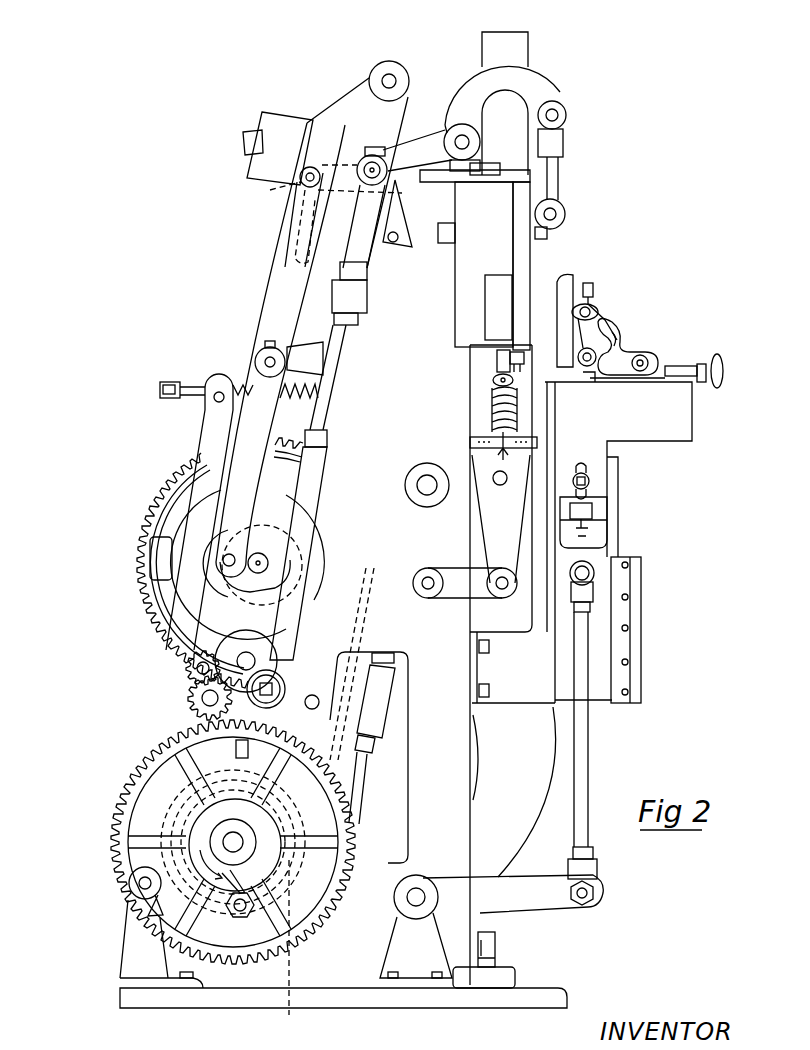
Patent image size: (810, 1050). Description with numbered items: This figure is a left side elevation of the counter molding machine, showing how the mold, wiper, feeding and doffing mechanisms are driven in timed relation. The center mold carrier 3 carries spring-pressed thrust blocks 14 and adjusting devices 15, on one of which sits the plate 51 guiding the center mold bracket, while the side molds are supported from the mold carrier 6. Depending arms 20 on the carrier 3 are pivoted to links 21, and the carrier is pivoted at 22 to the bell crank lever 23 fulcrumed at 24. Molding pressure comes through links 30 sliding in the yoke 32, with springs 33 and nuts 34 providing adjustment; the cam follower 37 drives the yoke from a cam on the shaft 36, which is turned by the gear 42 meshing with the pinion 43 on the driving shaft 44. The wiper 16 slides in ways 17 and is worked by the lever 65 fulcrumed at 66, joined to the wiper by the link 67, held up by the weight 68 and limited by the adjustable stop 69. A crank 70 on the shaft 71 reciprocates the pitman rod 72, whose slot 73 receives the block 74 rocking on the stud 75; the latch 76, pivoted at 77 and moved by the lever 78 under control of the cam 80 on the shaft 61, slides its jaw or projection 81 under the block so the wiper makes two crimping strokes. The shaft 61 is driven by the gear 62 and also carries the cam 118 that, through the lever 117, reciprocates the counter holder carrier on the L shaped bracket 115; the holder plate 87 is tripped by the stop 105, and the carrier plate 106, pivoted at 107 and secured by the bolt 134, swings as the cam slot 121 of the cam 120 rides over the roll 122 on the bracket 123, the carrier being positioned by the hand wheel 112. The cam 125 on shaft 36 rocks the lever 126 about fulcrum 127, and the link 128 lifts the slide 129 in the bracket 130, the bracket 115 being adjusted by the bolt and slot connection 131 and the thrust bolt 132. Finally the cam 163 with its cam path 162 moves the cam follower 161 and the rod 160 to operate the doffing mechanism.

The mold carrier 3 is at (478, 455).
The mold carrier 6 is at (490, 267).
The spring-pressed thrust blocks 14 is at (497, 378).
The adjusting devices 15 is at (470, 440).
The wiper 16 is at (528, 195).
The ways 17 is at (523, 250).
The depending arms 20 is at (490, 528).
The links 21 is at (463, 577).
The pivot 22 is at (500, 484).
The bell crank lever 23 is at (523, 803).
The fulcrum 24 is at (423, 487).
The links 30 is at (362, 783).
The yoke 32 is at (385, 697).
The springs 33 is at (395, 657).
The nuts 34 is at (373, 748).
The shaft 36 is at (230, 843).
The cam follower 37 is at (340, 685).
The gear 42 is at (112, 829).
The pinion 43 is at (190, 700).
The driving shaft 44 is at (203, 687).
The plate 51 is at (543, 420).
The shaft 61 is at (268, 563).
The gear 62 is at (137, 550).
The lever 65 is at (532, 80).
The fulcrum 66 is at (462, 138).
The link 67 is at (560, 170).
The weight 68 is at (272, 120).
The adjustable stop 69 is at (393, 193).
The crank 70 is at (235, 683).
The shaft 71 is at (252, 660).
The pitman rod 72 is at (318, 477).
The slot 73 is at (358, 247).
The block 74 is at (366, 158).
The stud 75 is at (388, 166).
The latch 76 is at (328, 207).
The pivot 77 is at (389, 73).
The lever 78 is at (265, 307).
The cam 80 is at (217, 600).
The jaw or projection 81 is at (270, 190).
The plate 87 is at (577, 278).
The stop 105 is at (523, 355).
The plate 106 is at (592, 288).
The pivot 107 is at (588, 377).
The hand wheel 112 is at (725, 371).
The L shaped bracket 115 is at (680, 432).
The lever 117 is at (203, 432).
The cam 118 is at (183, 523).
The cam 120 is at (605, 322).
The cam slot 121 is at (623, 342).
The roll 122 is at (662, 350).
The bracket 123 is at (623, 382).
The cam 125 is at (220, 875).
The lever 126 is at (362, 910).
The fulcrum 127 is at (415, 895).
The link 128 is at (592, 776).
The slide 129 is at (602, 628).
The bracket 130 is at (533, 697).
The bolt and slot connection 131 is at (590, 480).
The thrust bolt 132 is at (587, 533).
The bolt 134 is at (592, 310).
The rod 160 is at (362, 622).
The cam follower 161 is at (298, 952).
The cam path 162 is at (128, 903).
The cam 163 is at (170, 802).